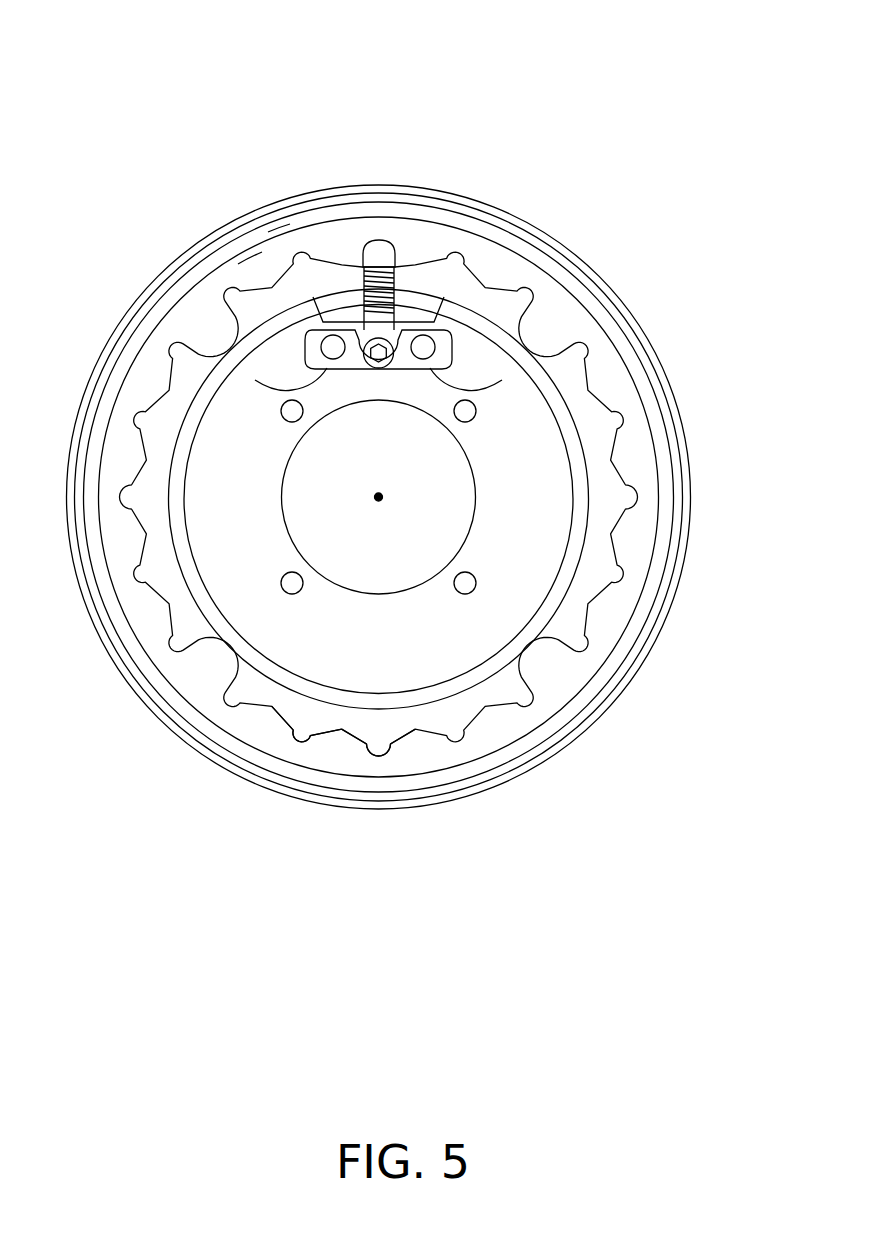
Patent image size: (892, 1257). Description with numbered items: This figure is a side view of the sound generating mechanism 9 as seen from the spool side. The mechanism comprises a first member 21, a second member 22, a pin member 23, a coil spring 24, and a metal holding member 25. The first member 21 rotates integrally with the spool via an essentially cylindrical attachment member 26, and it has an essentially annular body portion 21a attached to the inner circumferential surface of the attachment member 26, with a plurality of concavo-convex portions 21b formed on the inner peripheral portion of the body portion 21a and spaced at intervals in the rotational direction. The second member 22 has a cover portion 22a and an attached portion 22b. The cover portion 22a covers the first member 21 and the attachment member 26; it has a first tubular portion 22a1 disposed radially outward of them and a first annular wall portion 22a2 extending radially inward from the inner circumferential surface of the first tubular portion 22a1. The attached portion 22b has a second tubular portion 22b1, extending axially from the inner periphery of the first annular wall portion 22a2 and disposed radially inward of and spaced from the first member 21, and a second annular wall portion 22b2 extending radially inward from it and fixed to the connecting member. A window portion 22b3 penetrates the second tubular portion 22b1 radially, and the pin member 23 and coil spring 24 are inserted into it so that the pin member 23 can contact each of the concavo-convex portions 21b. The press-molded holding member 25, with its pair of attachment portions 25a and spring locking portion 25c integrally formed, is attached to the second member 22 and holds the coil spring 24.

The sound generating mechanism 9 is at (553, 90).
The first member 21 is at (275, 123).
The body portion 21a is at (250, 267).
The concavo-convex portions 21b is at (277, 213).
The second member 22 is at (378, 820).
The cover portion 22a is at (315, 937).
The first tubular portion 22a1 is at (175, 732).
The first annular wall portion 22a2 is at (305, 727).
The attached portion 22b is at (490, 850).
The second tubular portion 22b1 is at (477, 677).
The second annular wall portion 22b2 is at (480, 625).
The window portion 22b3 is at (445, 300).
The pin member 23 is at (378, 238).
The coil spring 24 is at (402, 280).
The holding member 25 is at (540, 323).
The attachment portions 25a is at (255, 380).
The spring locking portion 25c is at (362, 345).
The attachment member 26 is at (157, 677).